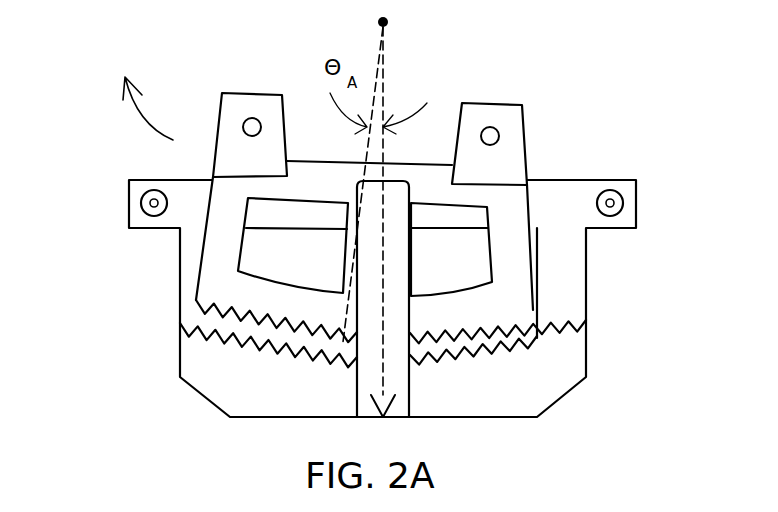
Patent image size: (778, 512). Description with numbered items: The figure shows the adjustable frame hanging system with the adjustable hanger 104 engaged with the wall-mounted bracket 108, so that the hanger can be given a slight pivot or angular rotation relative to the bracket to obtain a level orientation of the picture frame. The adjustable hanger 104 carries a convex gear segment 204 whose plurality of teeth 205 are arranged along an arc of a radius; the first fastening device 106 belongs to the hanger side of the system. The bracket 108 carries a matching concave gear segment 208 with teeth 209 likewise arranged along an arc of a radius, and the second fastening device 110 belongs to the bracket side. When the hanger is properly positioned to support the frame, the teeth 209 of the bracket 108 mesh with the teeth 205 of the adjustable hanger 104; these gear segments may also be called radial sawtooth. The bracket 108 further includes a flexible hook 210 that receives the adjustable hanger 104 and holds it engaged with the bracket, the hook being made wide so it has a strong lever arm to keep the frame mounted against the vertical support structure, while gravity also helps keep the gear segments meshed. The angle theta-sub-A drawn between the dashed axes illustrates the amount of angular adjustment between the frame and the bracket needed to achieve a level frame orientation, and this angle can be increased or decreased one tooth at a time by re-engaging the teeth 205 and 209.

The adjustable hanger 104 is at (524, 128).
The first fastening device 106 is at (252, 118).
The bracket 108 is at (605, 180).
The second fastening device 110 is at (146, 199).
The convex gear segment 204 is at (503, 305).
The teeth 205 is at (239, 314).
The concave gear segment 208 is at (537, 384).
The teeth 209 is at (208, 340).
The flexible hook 210 is at (401, 398).